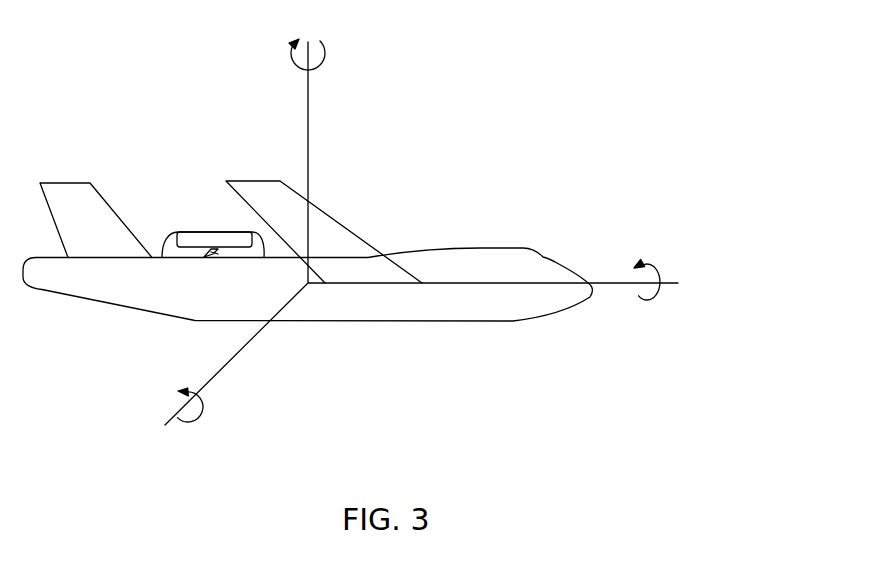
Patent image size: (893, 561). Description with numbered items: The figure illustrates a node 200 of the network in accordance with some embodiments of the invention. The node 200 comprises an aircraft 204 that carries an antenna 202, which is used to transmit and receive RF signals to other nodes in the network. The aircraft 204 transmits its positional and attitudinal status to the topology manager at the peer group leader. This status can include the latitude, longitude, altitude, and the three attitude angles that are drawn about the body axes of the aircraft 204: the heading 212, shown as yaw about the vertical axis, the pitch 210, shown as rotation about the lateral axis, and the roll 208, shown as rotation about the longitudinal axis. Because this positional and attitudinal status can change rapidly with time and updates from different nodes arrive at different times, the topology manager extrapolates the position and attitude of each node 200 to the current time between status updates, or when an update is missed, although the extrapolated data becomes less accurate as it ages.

The node 200 is at (188, 66).
The antenna 202 is at (210, 232).
The aircraft 204 is at (453, 249).
The roll 208 is at (648, 262).
The pitch 210 is at (203, 410).
The heading 212 is at (297, 68).